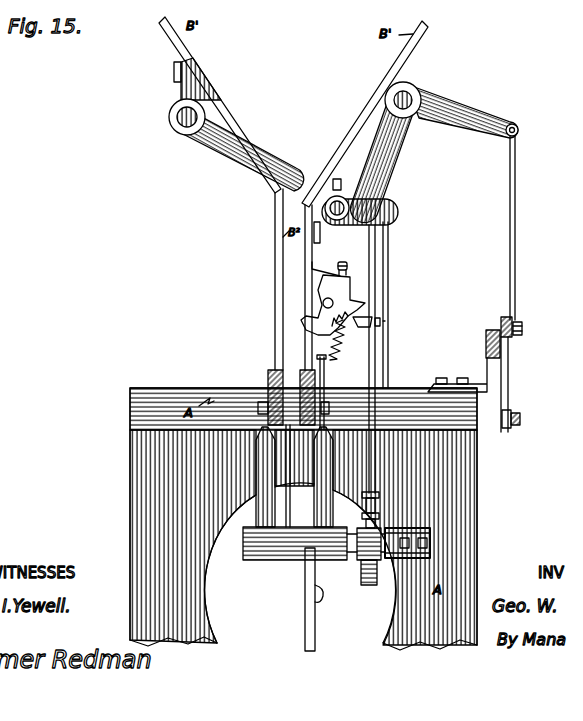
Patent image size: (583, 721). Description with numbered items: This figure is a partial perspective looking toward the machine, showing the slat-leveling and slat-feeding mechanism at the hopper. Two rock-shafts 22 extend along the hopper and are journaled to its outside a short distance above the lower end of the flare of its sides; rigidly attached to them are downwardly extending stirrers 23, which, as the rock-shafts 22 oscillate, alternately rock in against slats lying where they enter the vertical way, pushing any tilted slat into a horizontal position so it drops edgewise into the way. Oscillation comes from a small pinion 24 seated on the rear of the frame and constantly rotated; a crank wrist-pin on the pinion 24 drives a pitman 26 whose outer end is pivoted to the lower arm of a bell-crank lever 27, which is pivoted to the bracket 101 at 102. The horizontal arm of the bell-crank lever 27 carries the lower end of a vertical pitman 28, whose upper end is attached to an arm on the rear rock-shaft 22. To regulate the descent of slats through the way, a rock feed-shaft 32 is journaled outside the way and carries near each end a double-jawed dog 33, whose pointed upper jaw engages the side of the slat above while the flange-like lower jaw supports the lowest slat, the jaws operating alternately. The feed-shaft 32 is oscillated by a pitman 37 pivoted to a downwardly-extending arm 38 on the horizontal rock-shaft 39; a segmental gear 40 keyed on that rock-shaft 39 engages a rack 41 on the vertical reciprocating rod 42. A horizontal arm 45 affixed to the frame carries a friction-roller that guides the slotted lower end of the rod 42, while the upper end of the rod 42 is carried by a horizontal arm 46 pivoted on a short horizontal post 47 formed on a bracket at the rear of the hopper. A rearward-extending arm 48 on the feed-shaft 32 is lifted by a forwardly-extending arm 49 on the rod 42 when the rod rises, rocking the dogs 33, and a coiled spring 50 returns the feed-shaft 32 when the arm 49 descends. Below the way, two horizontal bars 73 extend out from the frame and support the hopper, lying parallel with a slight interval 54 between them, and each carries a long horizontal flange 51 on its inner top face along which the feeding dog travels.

The rock-shaft 22 is at (180, 116).
The stirrer 23 is at (297, 159).
The pinion 24 is at (462, 111).
The pitman 26 is at (512, 417).
The bell-crank lever 27 is at (514, 384).
The vertical pitman 28 is at (523, 228).
The rock feed-shaft 32 is at (335, 298).
The double-jawed dog 33 is at (322, 320).
The pitman 37 is at (314, 590).
The downwardly-extending arm 38 is at (324, 598).
The horizontal rock-shaft 39 is at (348, 536).
The segmental gear 40 is at (360, 559).
The rack 41 is at (380, 520).
The vertical reciprocating rod 42 is at (376, 463).
The horizontal arm 45 is at (383, 552).
The horizontal arm 46 is at (393, 209).
The short horizontal post 47 is at (340, 198).
The rearward-extending arm 48 is at (362, 304).
The forwardly-extending arm 49 is at (362, 327).
The coiled spring 50 is at (336, 352).
The horizontal flange 51 is at (275, 369).
The interval 54 is at (258, 406).
The horizontal bar 73 is at (325, 385).
The bracket 101 is at (484, 344).
The pivot 102 is at (490, 333).